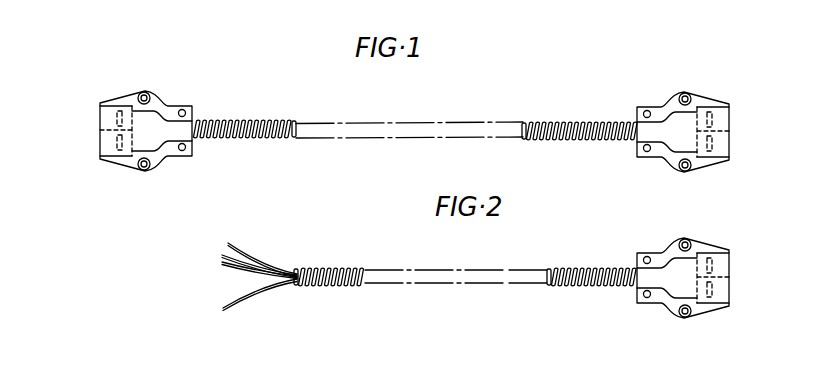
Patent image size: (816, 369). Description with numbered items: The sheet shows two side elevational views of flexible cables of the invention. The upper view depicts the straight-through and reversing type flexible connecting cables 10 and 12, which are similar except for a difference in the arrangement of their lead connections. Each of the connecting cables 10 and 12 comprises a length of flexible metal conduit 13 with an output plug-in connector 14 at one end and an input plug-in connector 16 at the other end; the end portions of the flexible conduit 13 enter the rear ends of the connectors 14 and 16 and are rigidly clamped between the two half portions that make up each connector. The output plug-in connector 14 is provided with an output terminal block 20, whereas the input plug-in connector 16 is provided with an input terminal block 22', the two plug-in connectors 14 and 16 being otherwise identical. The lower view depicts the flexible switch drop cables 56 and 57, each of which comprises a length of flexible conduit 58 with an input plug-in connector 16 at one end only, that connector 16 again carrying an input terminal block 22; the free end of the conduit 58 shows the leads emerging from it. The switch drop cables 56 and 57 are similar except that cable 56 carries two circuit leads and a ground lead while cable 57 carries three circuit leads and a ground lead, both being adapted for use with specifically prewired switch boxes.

In FIG. 1, the straight-through flexible connecting cable 10 is at (409, 110).
In FIG. 1, the reversing flexible connecting cable 12 is at (404, 121).
In FIG. 1, the flexible metal conduit 13 is at (276, 142).
In FIG. 1, the output plug-in connector 14 is at (706, 122).
In FIG. 1, the input plug-in connector 16 is at (135, 117).
In FIG. 2, the input plug-in connector 16 is at (708, 263).
In FIG. 1, the output terminal block 20 is at (729, 131).
In FIG. 1, the input terminal block 22' is at (116, 131).
In FIG. 2, the input terminal block 22 is at (738, 278).
In FIG. 2, the flexible switch drop cable 56 is at (484, 243).
In FIG. 2, the flexible switch drop cable 57 is at (537, 243).
In FIG. 2, the flexible conduit 58 is at (337, 286).